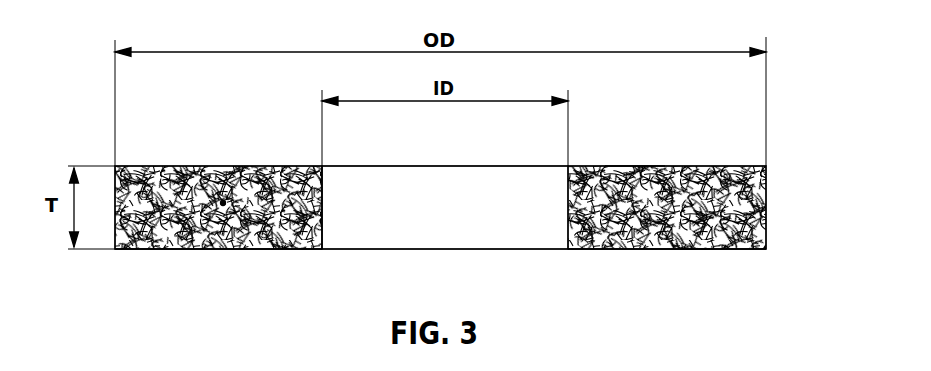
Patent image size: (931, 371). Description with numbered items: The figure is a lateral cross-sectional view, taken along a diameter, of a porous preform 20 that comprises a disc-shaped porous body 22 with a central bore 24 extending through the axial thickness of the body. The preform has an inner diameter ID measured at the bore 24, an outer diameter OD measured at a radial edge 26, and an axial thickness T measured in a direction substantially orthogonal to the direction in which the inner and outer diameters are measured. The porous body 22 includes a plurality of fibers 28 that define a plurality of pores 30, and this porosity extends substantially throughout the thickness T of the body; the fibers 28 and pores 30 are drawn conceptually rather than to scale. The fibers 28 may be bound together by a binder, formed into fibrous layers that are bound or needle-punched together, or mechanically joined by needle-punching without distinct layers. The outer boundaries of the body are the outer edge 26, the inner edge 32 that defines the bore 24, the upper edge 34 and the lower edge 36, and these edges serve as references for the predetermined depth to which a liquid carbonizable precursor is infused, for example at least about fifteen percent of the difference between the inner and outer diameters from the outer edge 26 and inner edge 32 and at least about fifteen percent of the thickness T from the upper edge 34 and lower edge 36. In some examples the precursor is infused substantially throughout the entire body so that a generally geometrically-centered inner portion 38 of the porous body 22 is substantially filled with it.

The porous preform 20 is at (102, 141).
The porous body 22 is at (771, 199).
The central bore 24 is at (491, 181).
The radial edge 26 is at (767, 226).
The fibers 28 is at (693, 236).
The pores 30 is at (657, 167).
The inner edge 32 is at (322, 207).
The upper edge 34 is at (218, 167).
The lower edge 36 is at (240, 250).
The inner portion 38 is at (224, 202).